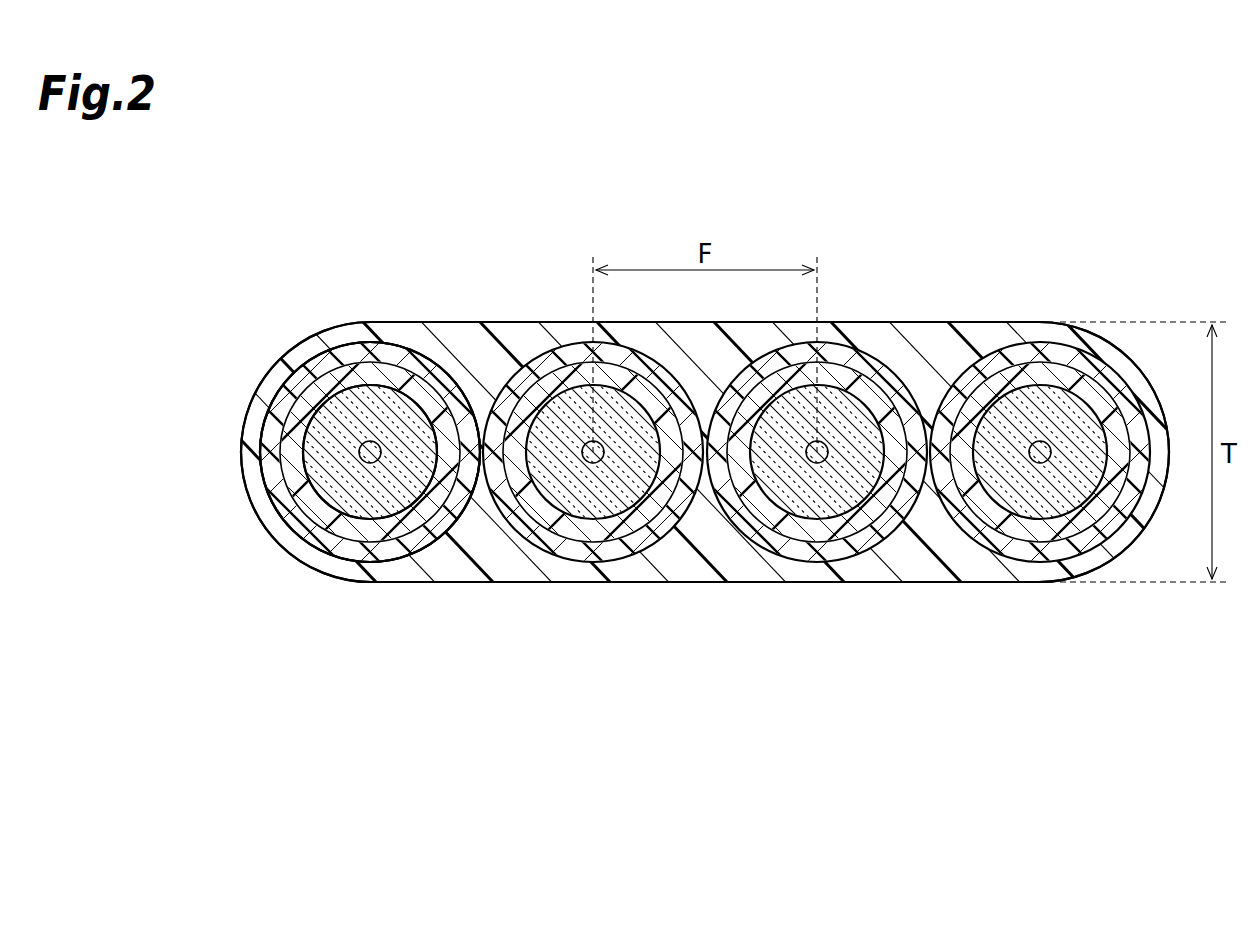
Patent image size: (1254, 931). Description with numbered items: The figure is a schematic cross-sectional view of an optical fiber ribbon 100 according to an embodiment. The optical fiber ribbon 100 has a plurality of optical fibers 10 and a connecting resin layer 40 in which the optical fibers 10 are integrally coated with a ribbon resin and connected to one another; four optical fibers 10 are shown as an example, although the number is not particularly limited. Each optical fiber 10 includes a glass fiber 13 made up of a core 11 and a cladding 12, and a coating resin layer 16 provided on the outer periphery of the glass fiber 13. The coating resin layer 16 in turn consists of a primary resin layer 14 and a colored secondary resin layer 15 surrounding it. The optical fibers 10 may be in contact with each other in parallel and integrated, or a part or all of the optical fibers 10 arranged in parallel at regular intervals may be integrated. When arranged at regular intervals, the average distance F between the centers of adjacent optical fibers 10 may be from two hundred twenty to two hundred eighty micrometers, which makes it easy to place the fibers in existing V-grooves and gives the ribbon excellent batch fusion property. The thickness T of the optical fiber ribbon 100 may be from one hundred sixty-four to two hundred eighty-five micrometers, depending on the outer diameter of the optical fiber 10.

The optical fiber 10 is at (366, 705).
The core 11 is at (372, 458).
The cladding 12 is at (407, 490).
The glass fiber 13 is at (332, 655).
The primary resin layer 14 is at (432, 498).
The colored secondary resin layer 15 is at (462, 503).
The coating resin layer 16 is at (470, 655).
The connecting resin layer 40 is at (922, 342).
The optical fiber ribbon 100 is at (1031, 291).